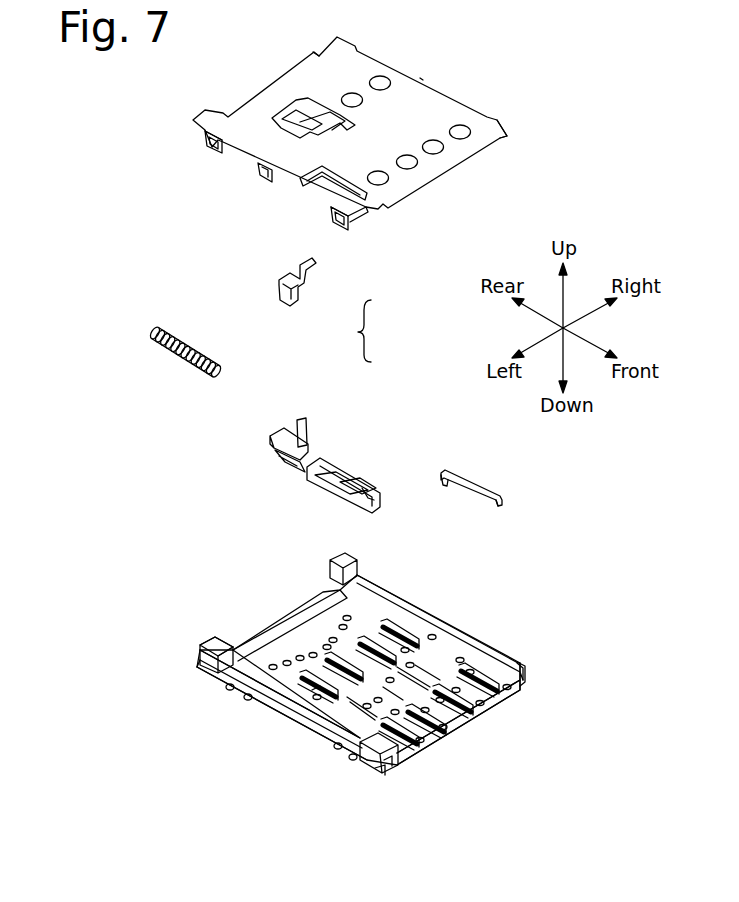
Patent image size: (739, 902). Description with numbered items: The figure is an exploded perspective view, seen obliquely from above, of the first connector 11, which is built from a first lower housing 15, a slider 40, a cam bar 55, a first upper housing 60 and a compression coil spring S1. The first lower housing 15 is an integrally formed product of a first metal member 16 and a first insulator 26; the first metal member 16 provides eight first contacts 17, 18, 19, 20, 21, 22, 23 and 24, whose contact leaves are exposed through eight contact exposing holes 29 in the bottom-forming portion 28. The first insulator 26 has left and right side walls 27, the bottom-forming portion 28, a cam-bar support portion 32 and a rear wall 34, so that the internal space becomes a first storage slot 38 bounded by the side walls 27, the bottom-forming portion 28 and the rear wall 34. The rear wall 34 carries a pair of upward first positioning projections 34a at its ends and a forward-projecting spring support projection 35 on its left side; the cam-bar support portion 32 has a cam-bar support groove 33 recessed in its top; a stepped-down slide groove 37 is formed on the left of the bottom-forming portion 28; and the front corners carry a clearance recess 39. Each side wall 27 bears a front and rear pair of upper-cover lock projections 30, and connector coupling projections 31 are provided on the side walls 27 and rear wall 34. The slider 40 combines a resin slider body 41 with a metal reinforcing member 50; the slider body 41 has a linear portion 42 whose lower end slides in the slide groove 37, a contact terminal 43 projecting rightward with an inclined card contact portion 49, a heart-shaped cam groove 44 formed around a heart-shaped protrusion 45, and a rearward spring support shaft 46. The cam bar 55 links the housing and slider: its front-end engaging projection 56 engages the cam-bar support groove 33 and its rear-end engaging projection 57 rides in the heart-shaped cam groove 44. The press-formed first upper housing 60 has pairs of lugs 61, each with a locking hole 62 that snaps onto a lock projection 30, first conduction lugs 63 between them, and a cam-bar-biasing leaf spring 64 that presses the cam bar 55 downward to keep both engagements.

The first connector 11 is at (84, 353).
The first lower housing 15 is at (334, 697).
The first metal member 16 is at (205, 680).
The first contact 17 is at (398, 752).
The first contact 18 is at (418, 745).
The first contact 19 is at (486, 708).
The first contact 20 is at (500, 698).
The first contact 21 is at (310, 692).
The first contact 22 is at (345, 660).
The first contact 23 is at (372, 645).
The first contact 24 is at (400, 630).
The first insulator 26 is at (200, 662).
The left and right side walls 27 is at (470, 650).
The bottom-forming portion 28 is at (517, 674).
The contact exposing hole 29 is at (436, 635).
The upper-cover lock projection 30 is at (230, 689).
The connector coupling projection 31 is at (248, 699).
The cam-bar support portion 32 is at (393, 770).
The cam-bar support groove 33 is at (368, 770).
The rear wall 34 is at (308, 613).
The first positioning projection 34a is at (334, 565).
The spring support projection 35 is at (230, 655).
The slide groove 37 is at (314, 690).
The first storage slot 38 is at (452, 650).
The clearance recess 39 is at (523, 679).
The slider 40 is at (358, 332).
The slider body 41 is at (303, 430).
The linear portion 42 is at (337, 480).
The contact terminal 43 is at (273, 435).
The heart-shaped cam groove 44 is at (325, 493).
The heart-shaped protrusion 45 is at (360, 488).
The spring support shaft 46 is at (283, 464).
The card contact portion 49 is at (307, 432).
The reinforcing member 50 is at (303, 289).
The cam bar 55 is at (504, 482).
The front-end engaging projection 56 is at (505, 498).
The rear-end engaging projection 57 is at (447, 482).
The first upper housing 60 is at (236, 180).
The lug 61 is at (375, 53).
The locking hole 62 is at (224, 152).
The first conduction lug 63 is at (420, 78).
The cam-bar-biasing leaf spring 64 is at (363, 213).
The compression coil spring S1 is at (178, 358).